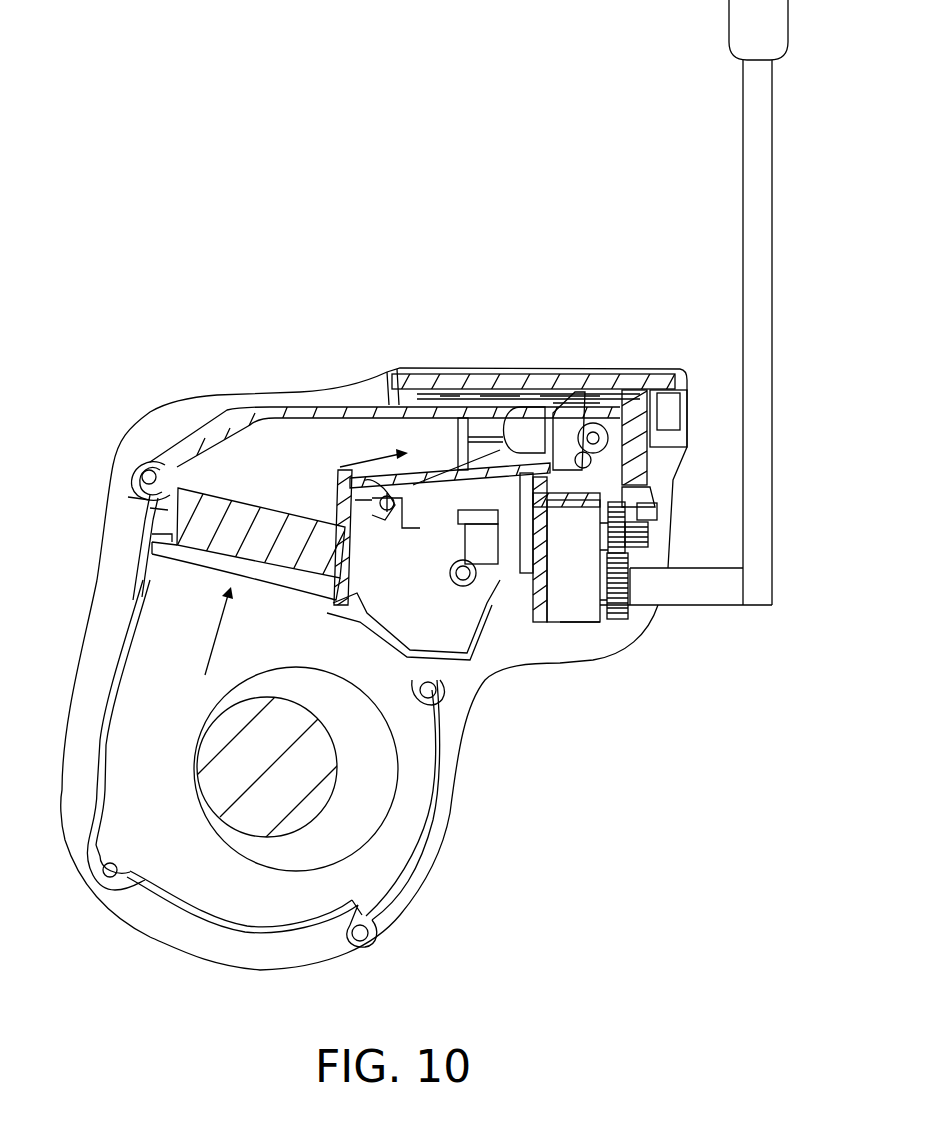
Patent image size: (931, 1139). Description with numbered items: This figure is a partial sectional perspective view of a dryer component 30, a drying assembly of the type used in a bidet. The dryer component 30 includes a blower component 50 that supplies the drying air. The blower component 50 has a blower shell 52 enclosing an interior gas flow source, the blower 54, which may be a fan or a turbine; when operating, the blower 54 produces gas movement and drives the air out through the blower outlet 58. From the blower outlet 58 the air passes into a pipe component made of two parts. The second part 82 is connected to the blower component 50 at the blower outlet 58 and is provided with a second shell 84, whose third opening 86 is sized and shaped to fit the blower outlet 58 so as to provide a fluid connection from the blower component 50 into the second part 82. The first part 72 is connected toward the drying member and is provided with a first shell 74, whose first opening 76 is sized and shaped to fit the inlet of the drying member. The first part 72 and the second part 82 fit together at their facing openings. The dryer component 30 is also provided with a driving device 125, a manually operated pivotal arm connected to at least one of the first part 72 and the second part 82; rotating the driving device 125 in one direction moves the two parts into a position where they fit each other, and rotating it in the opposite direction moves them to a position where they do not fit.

The dryer component 30 is at (499, 336).
The blower component 50 is at (440, 838).
The blower shell 52 is at (100, 750).
The blower 54 is at (213, 905).
The blower outlet 58 is at (165, 560).
The first part 72 is at (490, 455).
The first shell 74 is at (553, 403).
The first opening 76 is at (527, 428).
The second part 82 is at (307, 425).
The second shell 84 is at (358, 405).
The third opening 86 is at (240, 582).
The driving device 125 is at (735, 0).